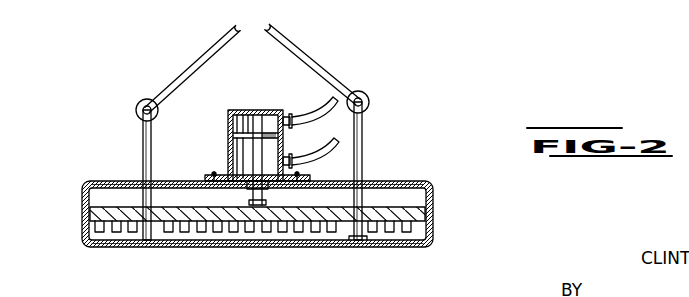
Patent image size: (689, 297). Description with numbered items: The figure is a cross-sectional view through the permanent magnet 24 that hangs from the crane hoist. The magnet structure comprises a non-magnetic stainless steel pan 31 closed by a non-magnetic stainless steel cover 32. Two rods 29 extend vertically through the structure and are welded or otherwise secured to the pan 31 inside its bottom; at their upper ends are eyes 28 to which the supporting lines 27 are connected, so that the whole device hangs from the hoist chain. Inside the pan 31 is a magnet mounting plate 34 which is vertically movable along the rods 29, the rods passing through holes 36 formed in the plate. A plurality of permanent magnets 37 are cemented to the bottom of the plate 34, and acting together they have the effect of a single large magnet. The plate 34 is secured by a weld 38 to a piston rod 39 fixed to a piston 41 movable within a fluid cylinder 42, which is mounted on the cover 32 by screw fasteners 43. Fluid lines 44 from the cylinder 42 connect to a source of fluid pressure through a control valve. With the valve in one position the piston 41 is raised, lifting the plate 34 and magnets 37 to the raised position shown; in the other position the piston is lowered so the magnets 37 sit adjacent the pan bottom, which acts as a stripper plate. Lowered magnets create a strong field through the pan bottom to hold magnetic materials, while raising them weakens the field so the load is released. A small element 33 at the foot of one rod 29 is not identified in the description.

The permanent magnet 24 is at (226, 251).
The supporting lines 27 is at (198, 60).
The eyes 28 is at (140, 101).
The rods 29 is at (142, 148).
The pan 31 is at (112, 250).
The cover 32 is at (107, 181).
The rod foot 33 is at (346, 236).
The magnet mounting plate 34 is at (410, 206).
The holes 36 is at (147, 213).
The permanent magnets 37 is at (314, 231).
The weld 38 is at (253, 201).
The piston rod 39 is at (233, 147).
The piston 41 is at (262, 130).
The fluid cylinder 42 is at (230, 117).
The screw fasteners 43 is at (293, 165).
The fluid lines 44 is at (327, 150).